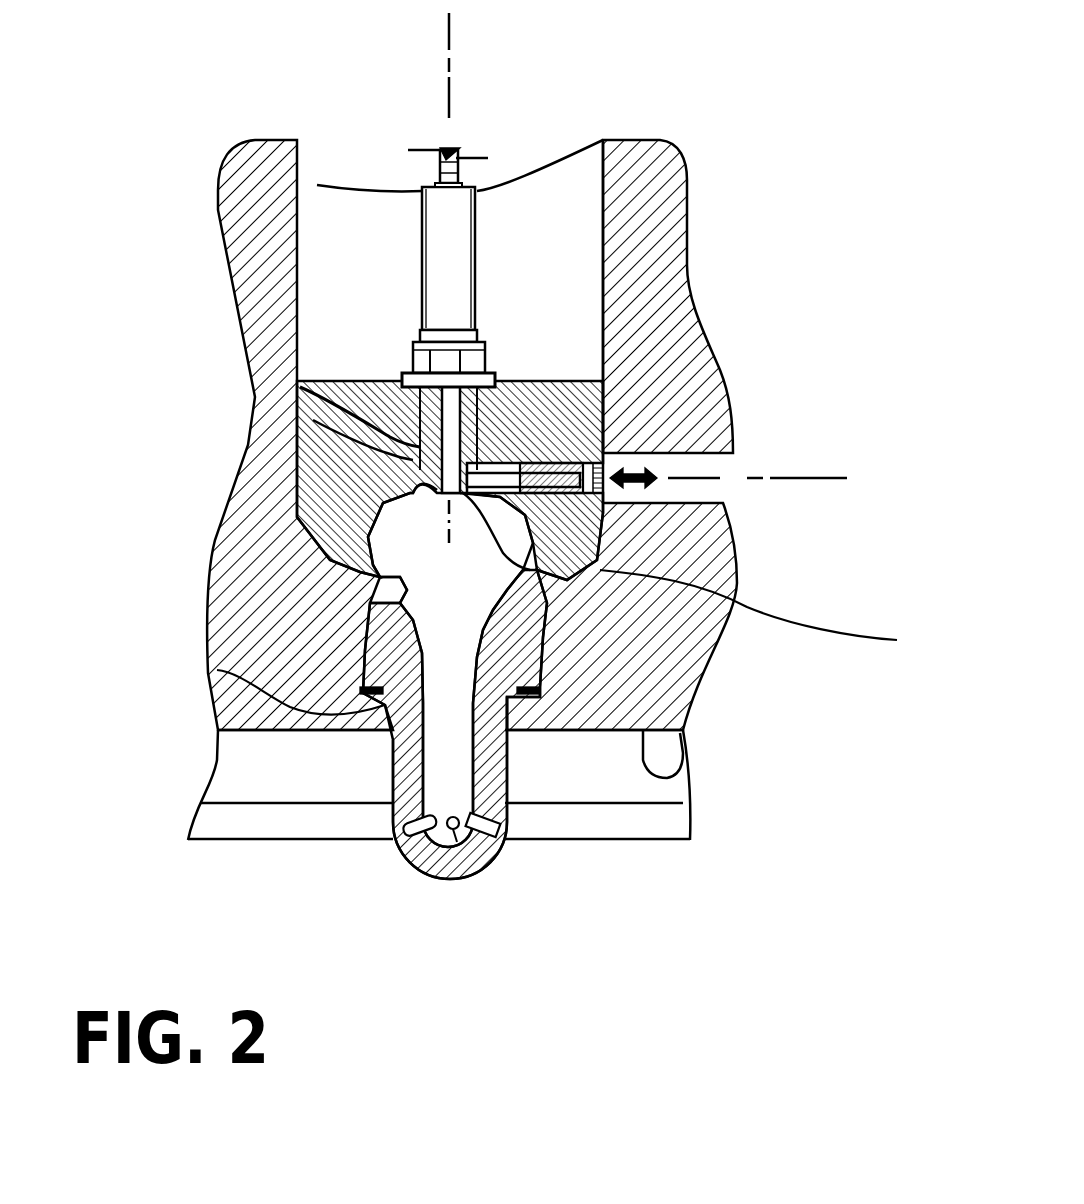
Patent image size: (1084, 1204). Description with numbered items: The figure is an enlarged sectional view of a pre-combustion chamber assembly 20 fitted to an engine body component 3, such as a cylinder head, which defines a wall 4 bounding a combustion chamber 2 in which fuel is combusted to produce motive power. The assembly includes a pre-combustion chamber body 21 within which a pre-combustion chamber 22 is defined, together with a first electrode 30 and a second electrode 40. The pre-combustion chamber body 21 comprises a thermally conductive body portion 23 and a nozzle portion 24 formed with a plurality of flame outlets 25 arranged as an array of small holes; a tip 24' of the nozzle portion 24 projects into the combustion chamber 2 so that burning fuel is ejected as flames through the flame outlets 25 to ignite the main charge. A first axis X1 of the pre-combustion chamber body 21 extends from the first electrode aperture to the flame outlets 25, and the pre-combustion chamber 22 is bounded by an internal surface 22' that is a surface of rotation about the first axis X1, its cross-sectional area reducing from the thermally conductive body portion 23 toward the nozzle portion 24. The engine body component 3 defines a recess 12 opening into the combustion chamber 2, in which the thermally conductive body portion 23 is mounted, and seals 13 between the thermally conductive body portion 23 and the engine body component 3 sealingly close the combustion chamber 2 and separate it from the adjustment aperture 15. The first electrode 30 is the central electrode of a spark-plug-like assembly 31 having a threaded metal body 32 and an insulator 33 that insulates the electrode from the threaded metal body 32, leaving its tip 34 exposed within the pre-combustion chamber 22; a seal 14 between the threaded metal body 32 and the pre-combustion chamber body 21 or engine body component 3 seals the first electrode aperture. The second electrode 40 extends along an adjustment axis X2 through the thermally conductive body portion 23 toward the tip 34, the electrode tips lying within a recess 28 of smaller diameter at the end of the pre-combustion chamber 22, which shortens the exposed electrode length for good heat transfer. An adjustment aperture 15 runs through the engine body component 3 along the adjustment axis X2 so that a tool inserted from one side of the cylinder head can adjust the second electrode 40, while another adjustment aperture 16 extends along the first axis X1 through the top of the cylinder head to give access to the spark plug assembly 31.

The combustion chamber 2 is at (620, 830).
The engine body component 3 is at (723, 610).
The wall 4 is at (683, 777).
The recess 12 is at (297, 478).
The seals 13 is at (217, 670).
The seal 14 is at (360, 381).
The adjustment aperture 15 is at (733, 457).
The adjustment aperture 16 is at (317, 185).
The pre-combustion chamber assembly 20 is at (502, 213).
The pre-combustion chamber body 21 is at (600, 540).
The pre-combustion chamber 22 is at (450, 665).
The internal surface 22' is at (233, 607).
The thermally conductive body portion 23 is at (607, 423).
The nozzle portion 24 is at (546, 832).
The tip of the nozzle portion 24' is at (455, 944).
The flame outlets 25 is at (405, 838).
The recess 28 is at (340, 435).
The first electrode 30 is at (515, 440).
The assembly 31 is at (405, 260).
The threaded metal body 32 is at (313, 420).
The insulator 33 is at (405, 413).
The tip 34 is at (776, 619).
The second electrode 40 is at (513, 455).
The first axis X1 is at (450, 60).
The adjustment axis X2 is at (807, 477).